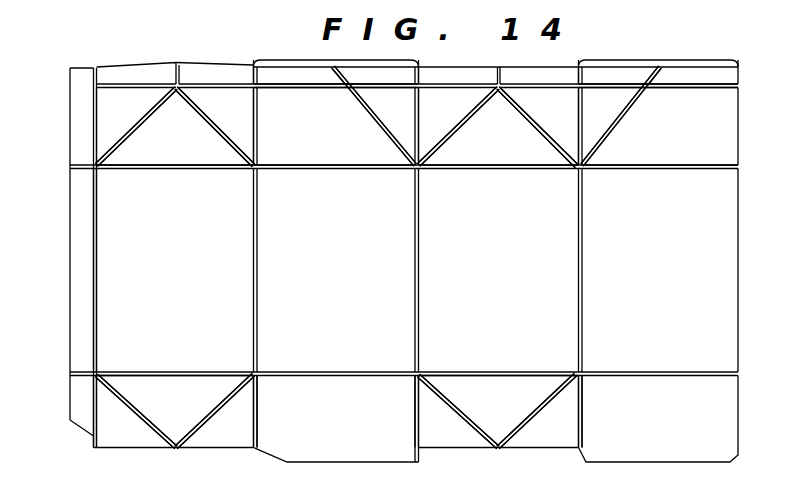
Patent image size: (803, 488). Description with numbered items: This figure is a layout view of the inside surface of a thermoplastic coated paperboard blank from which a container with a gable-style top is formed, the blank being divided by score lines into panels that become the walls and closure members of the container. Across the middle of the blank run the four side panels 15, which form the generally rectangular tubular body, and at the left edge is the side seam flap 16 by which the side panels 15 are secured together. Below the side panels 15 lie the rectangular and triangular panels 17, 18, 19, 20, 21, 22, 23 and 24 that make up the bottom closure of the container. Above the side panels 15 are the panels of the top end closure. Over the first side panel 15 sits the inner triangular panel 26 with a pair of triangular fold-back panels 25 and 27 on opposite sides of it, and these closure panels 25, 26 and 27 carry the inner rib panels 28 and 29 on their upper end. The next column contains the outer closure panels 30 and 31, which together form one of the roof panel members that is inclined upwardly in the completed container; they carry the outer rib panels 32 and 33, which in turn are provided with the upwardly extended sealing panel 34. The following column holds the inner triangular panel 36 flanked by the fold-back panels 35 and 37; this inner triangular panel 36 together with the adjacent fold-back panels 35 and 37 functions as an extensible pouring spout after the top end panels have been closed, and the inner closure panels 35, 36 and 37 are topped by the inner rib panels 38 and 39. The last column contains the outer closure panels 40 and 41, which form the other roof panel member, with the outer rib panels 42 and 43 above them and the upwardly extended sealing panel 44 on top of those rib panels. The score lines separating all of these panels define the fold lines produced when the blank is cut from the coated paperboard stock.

The side panels 15 is at (404, 270).
The side seam flap 16 is at (70, 256).
The bottom closure panel 17 is at (136, 411).
The bottom closure panel 18 is at (174, 410).
The bottom closure panel 19 is at (216, 410).
The bottom closure panel 20 is at (336, 419).
The bottom closure panel 21 is at (457, 411).
The bottom closure panel 22 is at (497, 410).
The bottom closure panel 23 is at (539, 410).
The bottom closure panel 24 is at (659, 419).
The triangular fold-back panel 25 is at (107, 117).
The inner triangular panel 26 is at (174, 127).
The triangular fold-back panel 27 is at (212, 117).
The inner rib panel 28 is at (132, 73).
The inner rib panel 29 is at (208, 72).
The outer closure panel 30 is at (335, 117).
The outer closure panel 31 is at (378, 116).
The outer rib panel 32 is at (292, 76).
The outer rib panel 33 is at (395, 80).
The sealing panel 34 is at (332, 66).
The triangular fold-back panel 35 is at (459, 116).
The inner triangular panel 36 is at (497, 127).
The triangular fold-back panel 37 is at (564, 116).
The inner rib panel 38 is at (471, 78).
The inner rib panel 39 is at (531, 76).
The outer closure panel 40 is at (613, 119).
The outer closure panel 41 is at (659, 115).
The outer rib panel 42 is at (615, 78).
The outer rib panel 43 is at (717, 79).
The sealing panel 44 is at (675, 64).